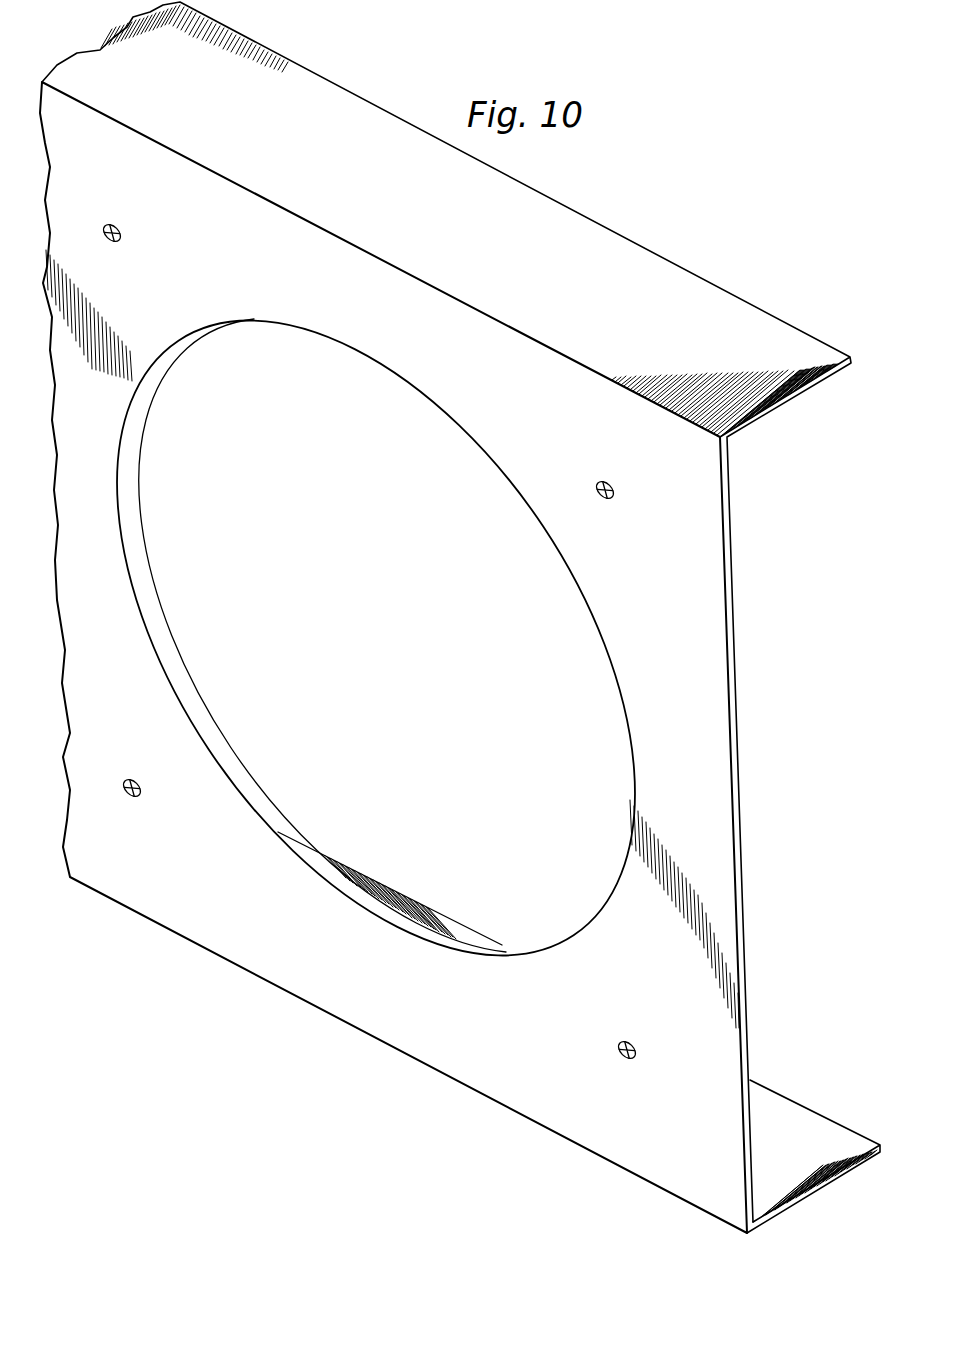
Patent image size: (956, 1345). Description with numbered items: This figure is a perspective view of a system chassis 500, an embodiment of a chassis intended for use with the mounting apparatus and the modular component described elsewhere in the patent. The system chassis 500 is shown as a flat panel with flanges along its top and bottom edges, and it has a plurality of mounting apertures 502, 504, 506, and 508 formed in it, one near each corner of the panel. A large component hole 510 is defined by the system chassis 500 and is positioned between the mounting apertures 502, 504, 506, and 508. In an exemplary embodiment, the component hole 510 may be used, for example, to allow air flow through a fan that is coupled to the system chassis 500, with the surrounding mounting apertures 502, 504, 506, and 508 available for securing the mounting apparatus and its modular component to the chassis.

The system chassis 500 is at (645, 179).
The mounting aperture 502 is at (104, 243).
The mounting aperture 504 is at (600, 500).
The mounting aperture 506 is at (618, 1060).
The mounting aperture 508 is at (126, 797).
The component hole 510 is at (625, 712).